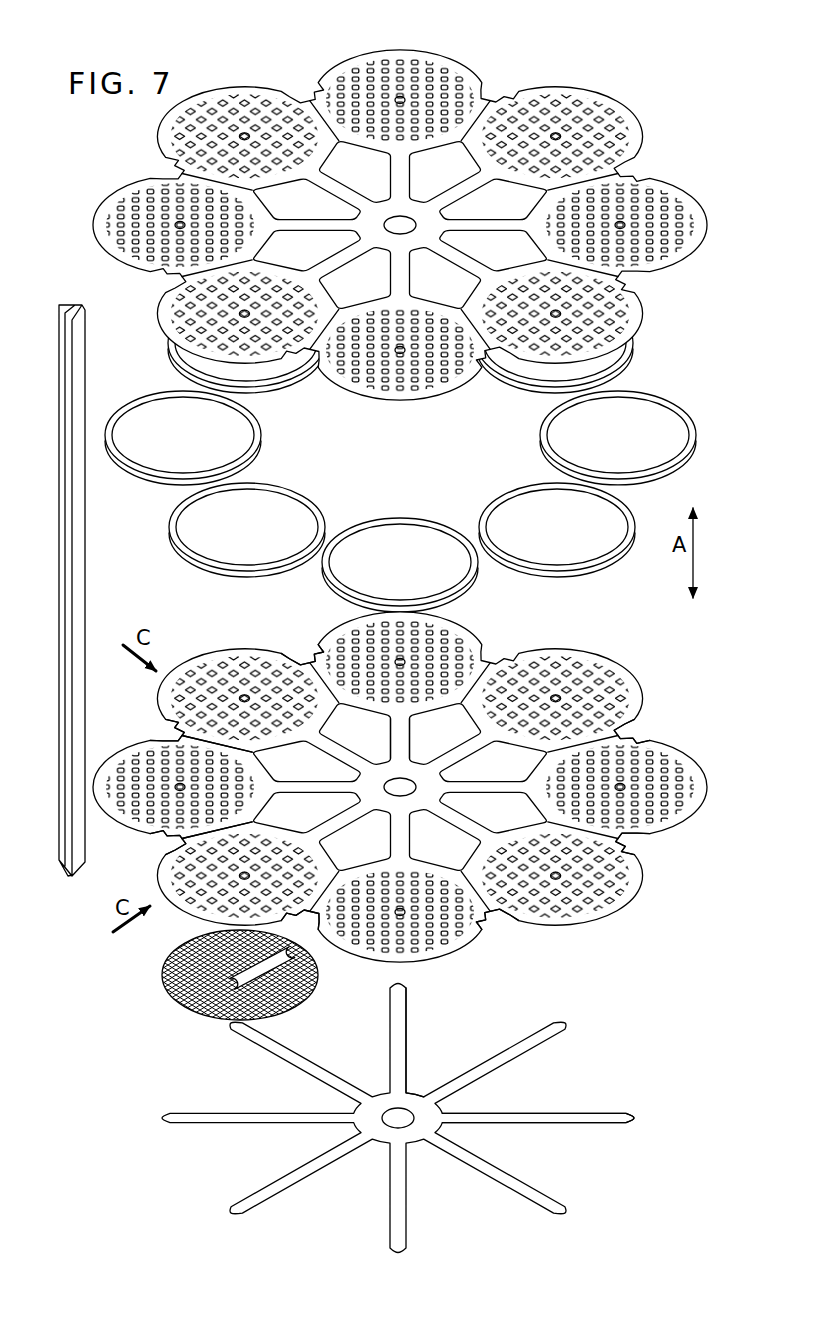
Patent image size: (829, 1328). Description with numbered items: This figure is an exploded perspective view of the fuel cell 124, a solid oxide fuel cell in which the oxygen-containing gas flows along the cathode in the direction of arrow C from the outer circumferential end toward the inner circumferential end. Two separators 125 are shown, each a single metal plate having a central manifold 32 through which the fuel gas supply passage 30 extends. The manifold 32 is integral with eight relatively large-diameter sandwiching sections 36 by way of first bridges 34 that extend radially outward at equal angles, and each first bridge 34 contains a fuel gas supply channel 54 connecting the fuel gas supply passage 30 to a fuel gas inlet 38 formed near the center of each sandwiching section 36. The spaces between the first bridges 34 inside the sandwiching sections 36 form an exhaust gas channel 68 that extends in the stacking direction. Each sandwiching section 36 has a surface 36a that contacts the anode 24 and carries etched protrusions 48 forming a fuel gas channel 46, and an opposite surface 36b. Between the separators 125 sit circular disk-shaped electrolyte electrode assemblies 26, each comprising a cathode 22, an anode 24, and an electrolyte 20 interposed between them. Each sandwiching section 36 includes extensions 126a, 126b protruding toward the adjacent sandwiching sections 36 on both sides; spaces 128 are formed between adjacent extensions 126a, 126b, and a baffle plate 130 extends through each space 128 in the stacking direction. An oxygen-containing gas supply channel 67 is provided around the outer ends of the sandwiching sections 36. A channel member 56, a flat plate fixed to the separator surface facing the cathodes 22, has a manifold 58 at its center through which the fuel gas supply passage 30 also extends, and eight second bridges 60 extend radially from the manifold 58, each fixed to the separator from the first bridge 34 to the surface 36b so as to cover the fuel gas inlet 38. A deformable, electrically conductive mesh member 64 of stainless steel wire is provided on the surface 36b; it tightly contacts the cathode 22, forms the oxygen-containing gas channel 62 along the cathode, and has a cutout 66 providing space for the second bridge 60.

The fuel cell 124 is at (604, 74).
The separator 125 is at (418, 512).
The baffle plate 130 is at (165, 287).
The electrolyte electrode assembly 26 is at (295, 482).
The cathode 22 is at (197, 522).
The electrolyte 20 is at (178, 542).
The anode 24 is at (180, 560).
The extension 126a is at (283, 639).
The extension 126b is at (173, 722).
The space 128 is at (318, 651).
The sandwiching section 36 is at (432, 649).
The fuel gas inlet 38 is at (556, 680).
The protrusion 48 is at (661, 767).
The fuel gas channel 46 is at (644, 787).
The surface 36a is at (594, 876).
The surface 36b is at (445, 918).
The oxygen-containing gas channel 62 is at (551, 930).
The fuel gas supply passage 30 is at (397, 776).
The manifold 32 is at (493, 761).
The first bridge 34 is at (425, 738).
The fuel gas supply channel 54 is at (493, 812).
The exhaust gas channel 68 is at (345, 814).
The oxygen-containing gas supply channel 67 is at (177, 863).
The mesh member 64 is at (164, 1015).
The cutout 66 is at (300, 948).
The channel member 56 is at (530, 1009).
The manifold 58 is at (421, 1085).
The second bridge 60 is at (533, 1115).